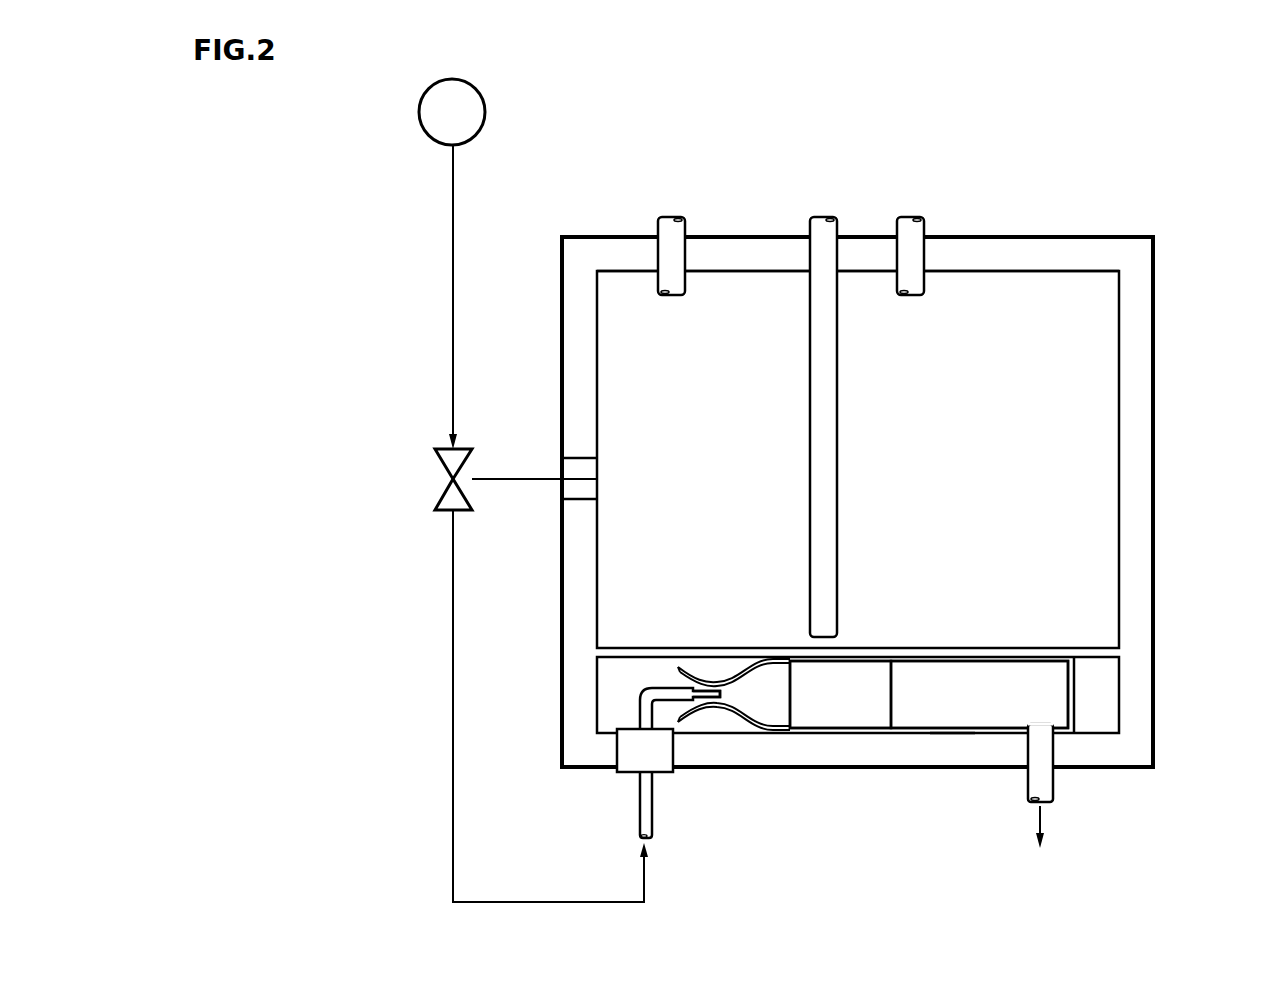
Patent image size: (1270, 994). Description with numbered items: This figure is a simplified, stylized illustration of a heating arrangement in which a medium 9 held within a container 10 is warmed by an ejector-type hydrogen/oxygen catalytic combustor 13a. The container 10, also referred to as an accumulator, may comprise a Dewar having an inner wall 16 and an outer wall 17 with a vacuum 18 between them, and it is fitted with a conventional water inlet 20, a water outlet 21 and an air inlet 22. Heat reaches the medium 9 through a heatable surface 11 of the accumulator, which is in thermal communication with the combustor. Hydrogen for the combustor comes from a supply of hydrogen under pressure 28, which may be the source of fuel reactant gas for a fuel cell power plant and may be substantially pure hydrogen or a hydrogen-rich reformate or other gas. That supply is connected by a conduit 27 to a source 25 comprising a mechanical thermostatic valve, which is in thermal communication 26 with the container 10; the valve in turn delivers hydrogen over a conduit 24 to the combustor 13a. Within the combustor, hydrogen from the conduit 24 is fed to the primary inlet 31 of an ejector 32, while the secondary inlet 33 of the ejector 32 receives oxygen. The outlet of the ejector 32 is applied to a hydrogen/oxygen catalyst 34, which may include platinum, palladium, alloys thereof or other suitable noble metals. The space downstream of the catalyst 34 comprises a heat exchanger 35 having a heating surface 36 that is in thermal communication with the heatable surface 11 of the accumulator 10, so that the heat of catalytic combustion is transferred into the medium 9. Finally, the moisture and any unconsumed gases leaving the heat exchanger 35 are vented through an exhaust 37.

The medium 9 is at (1005, 446).
The container 10 is at (1133, 226).
The heatable surface 11 is at (932, 657).
The combustor 13a is at (945, 748).
The inner wall 16 is at (1027, 272).
The outer wall 17 is at (1025, 237).
The vacuum 18 is at (970, 248).
The water inlet 20 is at (921, 218).
The water outlet 21 is at (834, 218).
The air inlet 22 is at (683, 218).
The conduit 24 is at (576, 900).
The source 25 is at (447, 479).
The thermal communication 26 is at (553, 472).
The conduit 27 is at (452, 243).
The supply of hydrogen under pressure 28 is at (430, 92).
The primary inlet 31 is at (708, 700).
The ejector 32 is at (750, 668).
The secondary inlet 33 is at (677, 688).
The hydrogen/oxygen catalyst 34 is at (835, 730).
The heat exchanger 35 is at (975, 714).
The heating surface 36 is at (1003, 662).
The exhaust 37 is at (1050, 782).